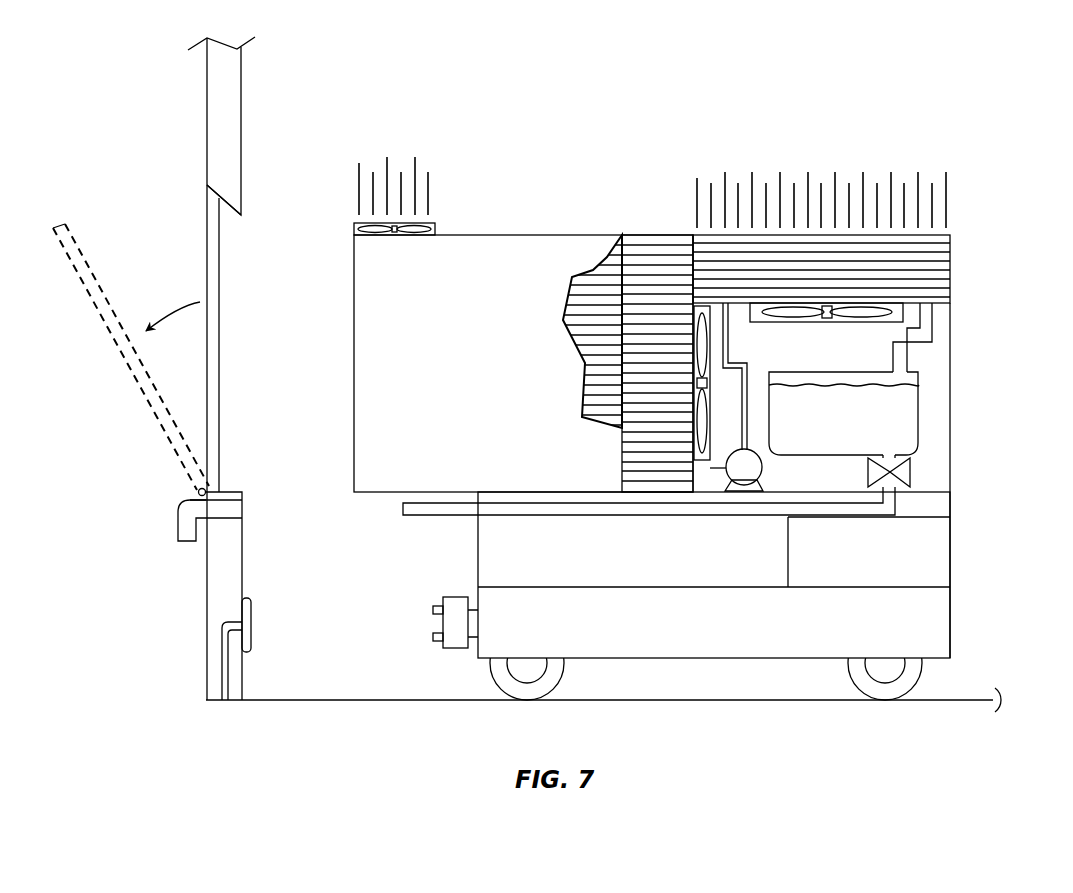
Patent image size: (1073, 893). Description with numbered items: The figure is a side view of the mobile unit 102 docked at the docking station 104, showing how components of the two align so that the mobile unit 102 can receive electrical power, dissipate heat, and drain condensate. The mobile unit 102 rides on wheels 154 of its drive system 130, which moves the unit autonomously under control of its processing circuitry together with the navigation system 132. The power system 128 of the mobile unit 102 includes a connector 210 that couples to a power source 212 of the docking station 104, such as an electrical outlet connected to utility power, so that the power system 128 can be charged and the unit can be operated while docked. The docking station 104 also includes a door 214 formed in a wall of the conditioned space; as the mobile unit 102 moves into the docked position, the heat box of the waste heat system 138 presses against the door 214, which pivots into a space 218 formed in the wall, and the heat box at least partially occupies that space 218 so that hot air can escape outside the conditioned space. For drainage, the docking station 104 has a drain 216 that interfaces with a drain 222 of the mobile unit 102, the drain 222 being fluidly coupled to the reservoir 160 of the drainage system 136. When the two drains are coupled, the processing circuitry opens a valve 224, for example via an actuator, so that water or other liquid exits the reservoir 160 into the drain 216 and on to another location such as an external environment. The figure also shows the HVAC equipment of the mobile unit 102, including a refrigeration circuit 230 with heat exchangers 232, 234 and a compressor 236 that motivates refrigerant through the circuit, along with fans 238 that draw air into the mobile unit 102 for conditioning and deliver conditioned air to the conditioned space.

The mobile unit 102 is at (852, 114).
The docking station 104 is at (268, 181).
The power system 128 is at (741, 610).
The drive system 130 is at (674, 684).
The navigation system 132 is at (945, 553).
The drainage system 136 is at (896, 408).
The waste heat system 138 is at (536, 147).
The wheels 154 is at (563, 668).
The reservoir 160 is at (910, 398).
The connector 210 is at (452, 597).
The power source 212 is at (251, 620).
The door 214 is at (219, 266).
The drain 216 is at (178, 511).
The space 218 is at (231, 349).
The drain 222 is at (410, 517).
The valve 224 is at (911, 472).
The refrigeration circuit 230 is at (686, 205).
The heat exchanger 232 is at (945, 262).
The heat exchanger 234 is at (660, 243).
The compressor 236 is at (765, 473).
The fans 238 is at (907, 312).